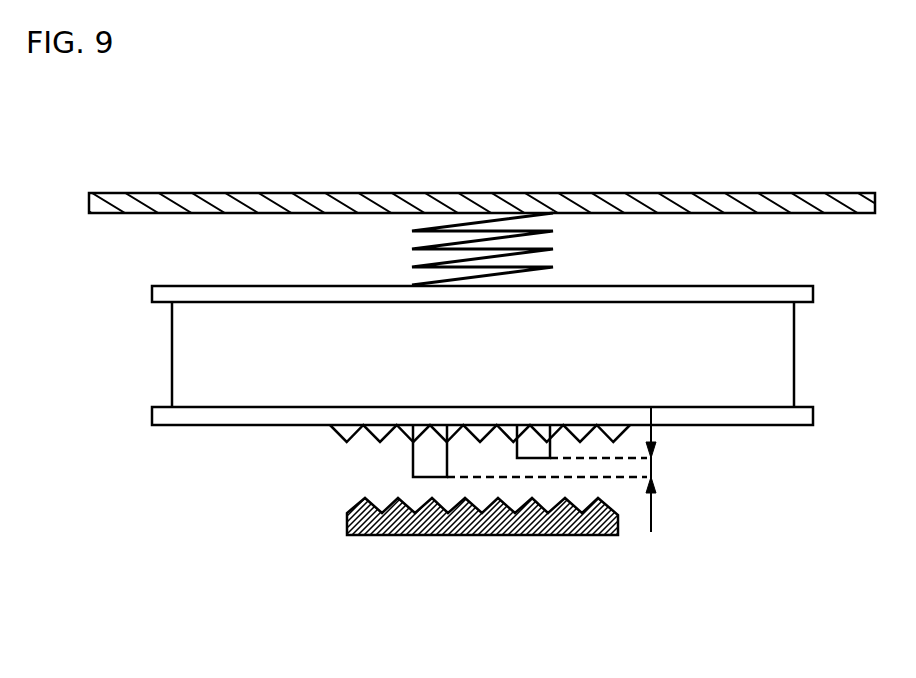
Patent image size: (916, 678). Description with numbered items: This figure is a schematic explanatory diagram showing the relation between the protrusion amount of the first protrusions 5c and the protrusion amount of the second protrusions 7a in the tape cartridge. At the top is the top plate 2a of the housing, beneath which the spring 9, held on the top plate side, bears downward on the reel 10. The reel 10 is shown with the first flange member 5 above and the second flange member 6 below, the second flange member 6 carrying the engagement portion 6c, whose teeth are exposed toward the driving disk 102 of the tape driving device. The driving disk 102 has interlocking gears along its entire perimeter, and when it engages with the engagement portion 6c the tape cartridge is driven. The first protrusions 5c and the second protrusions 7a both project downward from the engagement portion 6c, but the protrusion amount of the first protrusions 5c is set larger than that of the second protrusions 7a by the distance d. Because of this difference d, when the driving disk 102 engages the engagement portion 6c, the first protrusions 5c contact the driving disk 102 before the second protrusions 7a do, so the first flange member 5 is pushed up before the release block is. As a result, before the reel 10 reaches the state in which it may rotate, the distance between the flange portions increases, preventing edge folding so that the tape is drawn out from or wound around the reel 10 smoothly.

The top plate 2a is at (790, 193).
The spring 9 is at (553, 231).
The first flange member 5 is at (785, 286).
The second flange member 6 is at (807, 407).
The engagement portion 6c is at (337, 428).
The first protrusions 5c is at (412, 467).
The second protrusions 7a is at (533, 450).
The reel 10 is at (762, 483).
The driving disk 102 is at (553, 537).
The difference in protrusion amount d is at (664, 469).